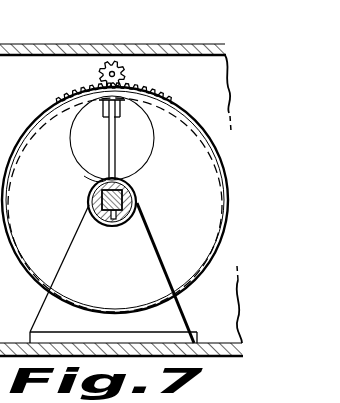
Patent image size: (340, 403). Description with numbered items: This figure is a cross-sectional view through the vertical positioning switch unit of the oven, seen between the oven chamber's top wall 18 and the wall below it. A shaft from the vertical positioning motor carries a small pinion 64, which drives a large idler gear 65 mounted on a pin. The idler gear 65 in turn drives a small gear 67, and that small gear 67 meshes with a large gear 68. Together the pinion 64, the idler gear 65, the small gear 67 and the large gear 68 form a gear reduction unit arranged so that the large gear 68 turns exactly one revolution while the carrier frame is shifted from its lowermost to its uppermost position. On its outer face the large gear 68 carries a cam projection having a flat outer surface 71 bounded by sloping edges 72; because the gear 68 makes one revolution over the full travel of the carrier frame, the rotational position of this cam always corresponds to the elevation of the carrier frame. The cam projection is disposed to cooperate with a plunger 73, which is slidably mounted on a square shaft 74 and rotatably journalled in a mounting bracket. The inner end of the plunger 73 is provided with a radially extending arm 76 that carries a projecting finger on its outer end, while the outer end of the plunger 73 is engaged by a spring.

The top wall 18 is at (217, 357).
The small pinion 64 is at (137, 203).
The large idler gear 65 is at (146, 131).
The small gear 67 is at (125, 77).
The large gear 68 is at (224, 166).
The flat outer surface 71 is at (112, 138).
The sloping edges 72 is at (100, 108).
The plunger 73 is at (84, 200).
The square shaft 74 is at (117, 223).
The radially extending arm 76 is at (99, 178).